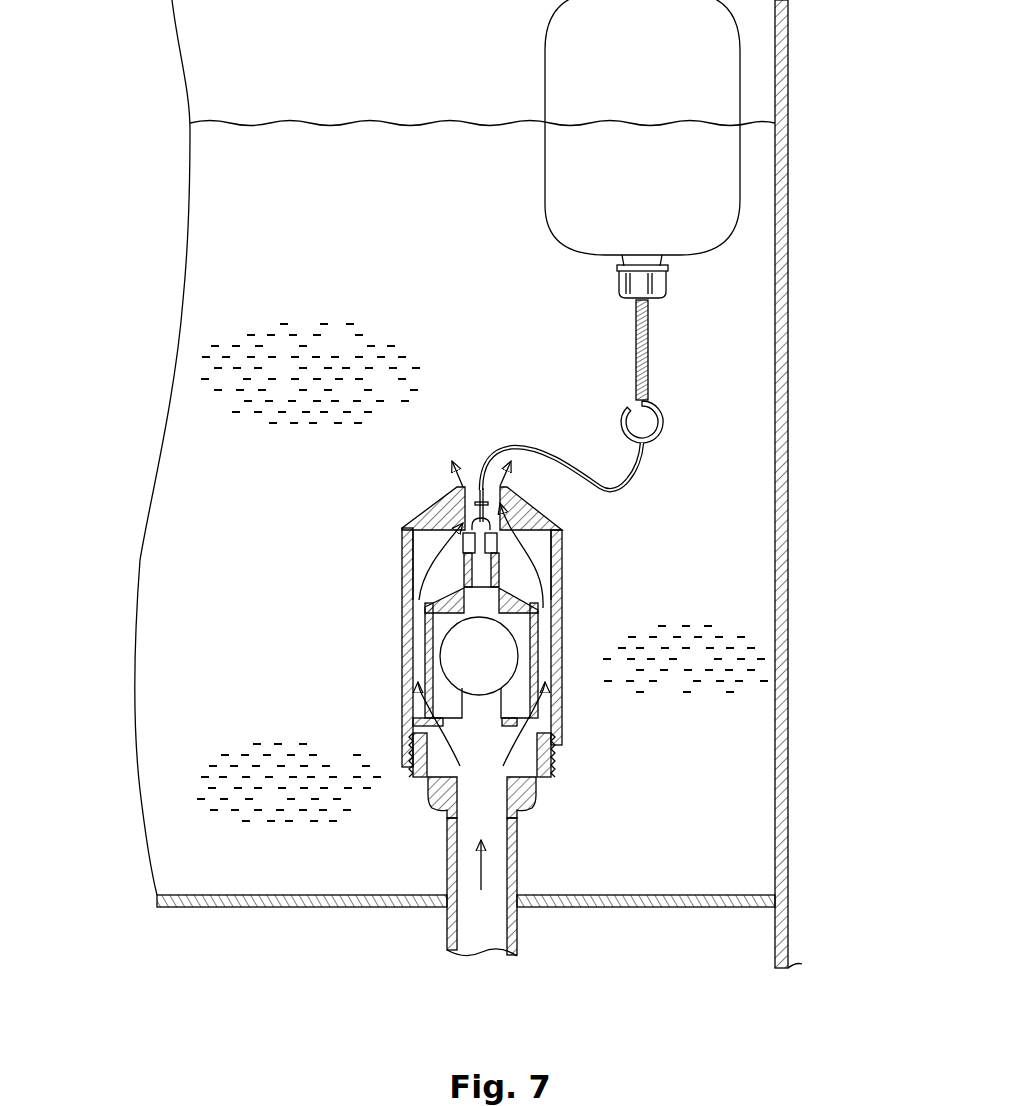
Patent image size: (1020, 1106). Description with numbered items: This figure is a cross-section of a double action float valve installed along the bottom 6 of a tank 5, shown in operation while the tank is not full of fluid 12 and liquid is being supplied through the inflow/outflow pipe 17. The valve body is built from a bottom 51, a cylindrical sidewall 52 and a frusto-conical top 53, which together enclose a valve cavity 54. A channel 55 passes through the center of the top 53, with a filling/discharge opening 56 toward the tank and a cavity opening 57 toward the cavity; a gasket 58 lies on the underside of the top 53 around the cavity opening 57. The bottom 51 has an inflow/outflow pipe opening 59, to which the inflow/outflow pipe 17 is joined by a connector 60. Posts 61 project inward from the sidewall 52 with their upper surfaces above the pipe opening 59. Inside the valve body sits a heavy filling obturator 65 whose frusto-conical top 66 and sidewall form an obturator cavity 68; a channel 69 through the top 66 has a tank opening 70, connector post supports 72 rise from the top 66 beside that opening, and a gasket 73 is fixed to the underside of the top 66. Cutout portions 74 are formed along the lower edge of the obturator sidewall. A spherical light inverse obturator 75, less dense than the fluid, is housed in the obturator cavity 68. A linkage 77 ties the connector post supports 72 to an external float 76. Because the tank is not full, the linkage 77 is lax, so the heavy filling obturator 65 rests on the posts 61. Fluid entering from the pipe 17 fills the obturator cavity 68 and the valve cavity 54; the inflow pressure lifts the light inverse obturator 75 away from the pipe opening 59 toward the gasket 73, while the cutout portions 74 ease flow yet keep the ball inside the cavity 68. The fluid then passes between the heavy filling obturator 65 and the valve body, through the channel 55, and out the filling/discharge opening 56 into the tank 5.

The tank 5 is at (790, 343).
The bottom 6 is at (712, 890).
The fluid 12 is at (276, 243).
The inflow/outflow pipe 17 is at (517, 848).
The bottom 51 is at (536, 787).
The cylindrical sidewall 52 is at (402, 690).
The top 53 is at (430, 505).
The valve cavity 54 is at (472, 738).
The channel 55 is at (505, 501).
The filling/discharge opening 56 is at (462, 486).
The cavity opening 57 is at (462, 520).
The gasket 58 is at (413, 522).
The inflow/outflow pipe opening 59 is at (487, 775).
The connector 60 is at (533, 802).
The posts 61 is at (413, 714).
The heavy filling obturator 65 is at (415, 668).
The top 66 is at (440, 597).
The obturator cavity 68 is at (444, 622).
The channel 69 is at (487, 598).
The tank opening 70 is at (474, 587).
The connector post supports 72 is at (500, 565).
The gasket 73 is at (537, 612).
The cutout portions 74 is at (538, 701).
The light inverse obturator 75 is at (512, 675).
The external float 76 is at (742, 150).
The linkage 77 is at (652, 445).